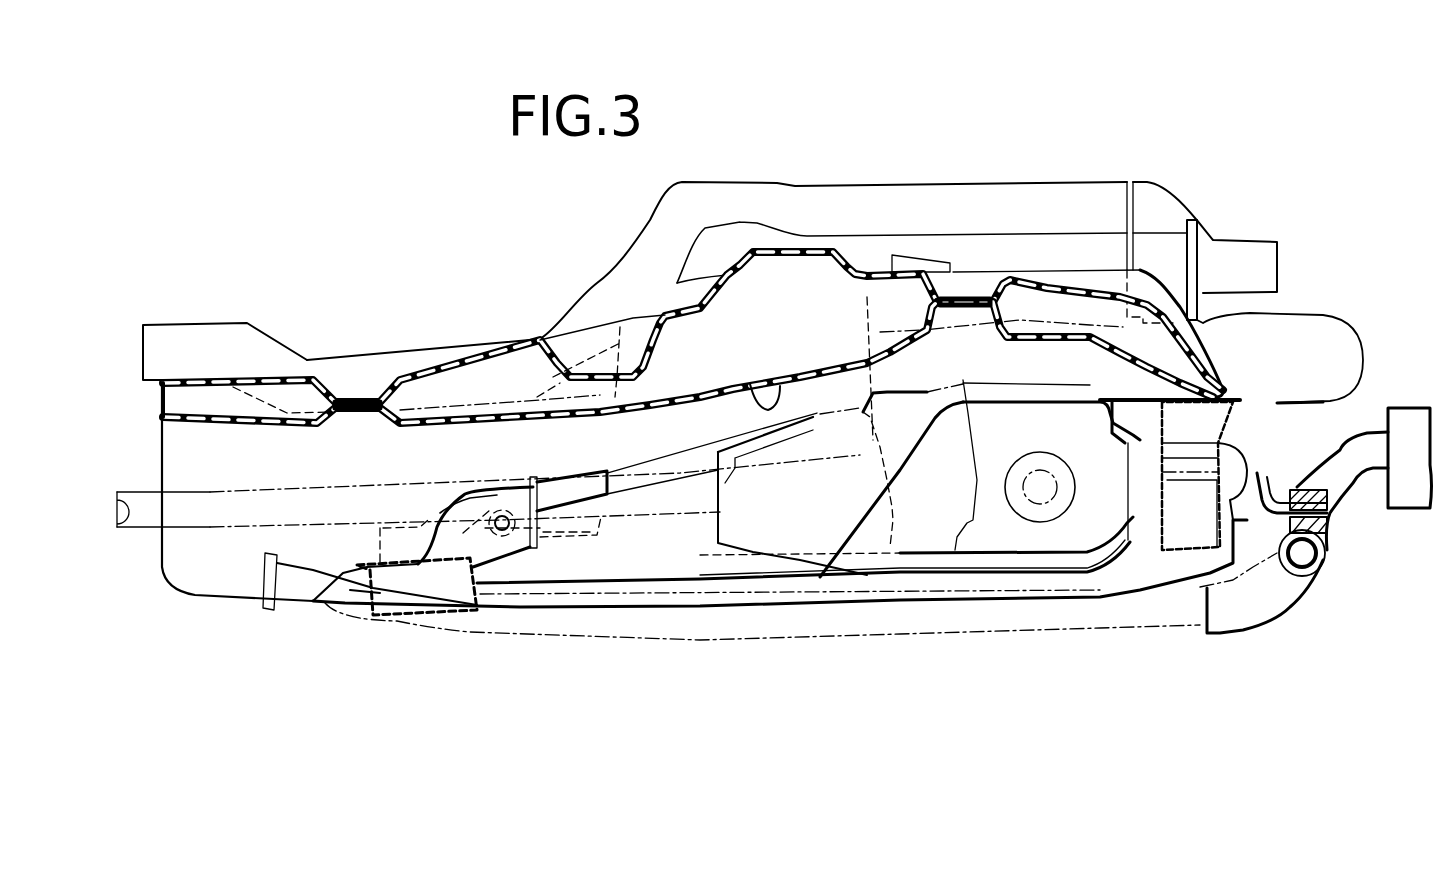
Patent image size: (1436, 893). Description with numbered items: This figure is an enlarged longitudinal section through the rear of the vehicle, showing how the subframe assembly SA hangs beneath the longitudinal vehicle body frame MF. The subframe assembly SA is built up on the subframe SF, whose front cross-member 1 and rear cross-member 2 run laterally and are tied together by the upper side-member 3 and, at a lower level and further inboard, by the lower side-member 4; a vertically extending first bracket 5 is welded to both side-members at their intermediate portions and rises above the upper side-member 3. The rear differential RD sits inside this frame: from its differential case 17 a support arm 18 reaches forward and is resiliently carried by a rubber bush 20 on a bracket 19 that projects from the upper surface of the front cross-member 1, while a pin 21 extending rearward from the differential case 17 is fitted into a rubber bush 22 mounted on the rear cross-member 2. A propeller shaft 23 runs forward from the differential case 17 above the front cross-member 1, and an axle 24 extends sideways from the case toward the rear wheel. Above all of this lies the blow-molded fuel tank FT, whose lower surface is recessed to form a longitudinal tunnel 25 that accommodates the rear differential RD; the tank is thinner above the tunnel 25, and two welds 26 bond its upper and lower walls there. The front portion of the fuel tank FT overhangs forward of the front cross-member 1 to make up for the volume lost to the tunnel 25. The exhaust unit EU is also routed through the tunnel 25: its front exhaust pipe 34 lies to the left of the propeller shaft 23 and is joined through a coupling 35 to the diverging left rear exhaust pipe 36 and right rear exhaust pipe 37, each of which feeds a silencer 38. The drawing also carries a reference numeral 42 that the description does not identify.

The front cross-member 1 is at (413, 613).
The rear cross-member 2 is at (1238, 413).
The upper side-member 3 is at (727, 407).
The lower side-member 4 is at (917, 563).
The first bracket 5 is at (963, 467).
The differential case 17 is at (755, 547).
The support arm 18 is at (590, 477).
The bracket 19 is at (467, 505).
The rubber bush 20 is at (595, 512).
The pin 21 is at (1193, 475).
The rubber bush 22 is at (1183, 455).
The propeller shaft 23 is at (225, 498).
The axle 24 is at (1058, 480).
The tunnel 25 is at (773, 393).
The weld 26 is at (367, 413).
The front exhaust pipe 34 is at (863, 647).
The coupling 35 is at (1272, 620).
The left rear exhaust pipe 36 is at (1313, 573).
The right rear exhaust pipe 37 is at (1363, 440).
The silencer 38 is at (1400, 418).
The lower support bracket 42 is at (1277, 567).
The fuel tank FT is at (217, 600).
The subframe assembly SA is at (503, 268).
The vehicle body frame MF is at (752, 190).
The subframe SF is at (447, 622).
The rear differential RD is at (705, 550).
The exhaust unit EU is at (1053, 635).